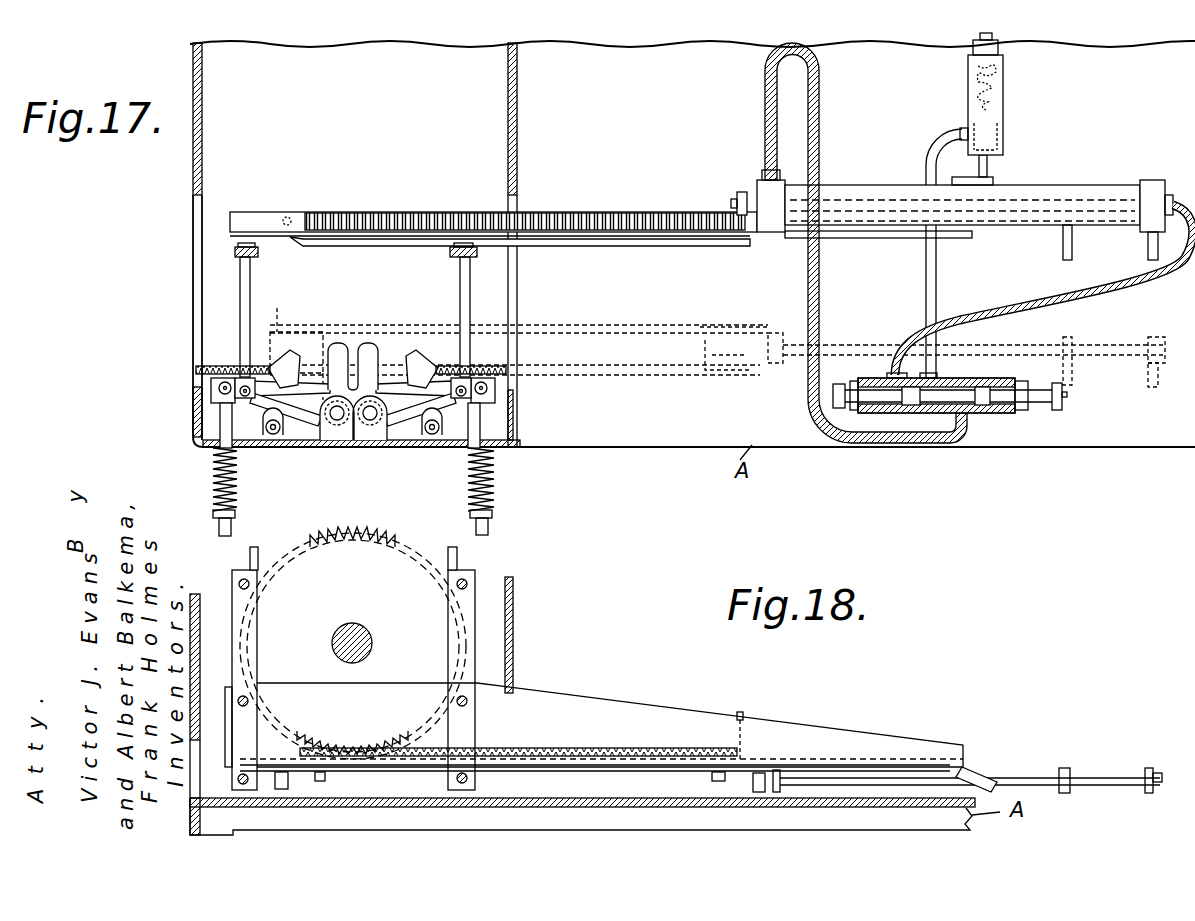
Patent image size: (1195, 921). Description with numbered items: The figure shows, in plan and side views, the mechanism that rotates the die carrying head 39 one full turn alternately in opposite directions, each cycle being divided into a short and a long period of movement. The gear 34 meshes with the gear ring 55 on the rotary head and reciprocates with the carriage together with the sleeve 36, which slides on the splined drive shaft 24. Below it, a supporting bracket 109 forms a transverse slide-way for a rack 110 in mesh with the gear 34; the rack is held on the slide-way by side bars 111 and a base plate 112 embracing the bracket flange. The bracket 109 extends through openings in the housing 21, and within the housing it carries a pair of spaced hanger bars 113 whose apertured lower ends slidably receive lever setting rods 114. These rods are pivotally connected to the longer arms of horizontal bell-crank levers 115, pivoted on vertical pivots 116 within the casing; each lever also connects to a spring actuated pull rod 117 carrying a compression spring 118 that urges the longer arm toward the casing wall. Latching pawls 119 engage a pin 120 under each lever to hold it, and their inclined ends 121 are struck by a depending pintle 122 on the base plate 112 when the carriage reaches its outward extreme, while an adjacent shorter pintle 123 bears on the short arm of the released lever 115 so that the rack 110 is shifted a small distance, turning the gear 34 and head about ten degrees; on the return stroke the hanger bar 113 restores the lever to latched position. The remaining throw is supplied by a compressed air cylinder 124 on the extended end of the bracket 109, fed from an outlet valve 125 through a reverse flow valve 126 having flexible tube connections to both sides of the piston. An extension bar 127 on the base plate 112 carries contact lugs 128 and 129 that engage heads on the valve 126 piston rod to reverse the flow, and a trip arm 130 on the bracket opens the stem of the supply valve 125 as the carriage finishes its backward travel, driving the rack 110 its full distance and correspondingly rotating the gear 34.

In FIG. 17, the housing 21 is at (192, 350).
In FIG. 18, the housing 21 is at (514, 588).
In FIG. 18, the shaft 24 is at (370, 638).
In FIG. 18, the gear 34 is at (350, 540).
In FIG. 18, the sleeve 36 is at (345, 630).
In FIG. 18, the die carrying head 39 is at (318, 526).
In FIG. 18, the toothed segment 55 is at (386, 524).
In FIG. 17, the supporting bracket 109 is at (253, 212).
In FIG. 18, the supporting bracket 109 is at (585, 698).
In FIG. 17, the rack 110 is at (581, 212).
In FIG. 18, the rack 110 is at (665, 740).
In FIG. 17, the side bars 111 is at (425, 212).
In FIG. 18, the base plate 112 is at (426, 784).
In FIG. 17, the hanger bars 113 is at (238, 262).
In FIG. 18, the hanger bars 113 is at (470, 660).
In FIG. 17, the lever setting rods 114 is at (460, 272).
In FIG. 18, the lever setting rods 114 is at (462, 776).
In FIG. 17, the bell-crank levers 115 is at (235, 248).
In FIG. 17, the vertical pivots 116 is at (343, 422).
In FIG. 17, the pull rod 117 is at (220, 420).
In FIG. 17, the compression spring 118 is at (212, 476).
In FIG. 17, the latching pawls 119 is at (222, 432).
In FIG. 17, the pin 120 is at (492, 416).
In FIG. 17, the inclined ends 121 is at (410, 352).
In FIG. 17, the depending pintle 122 is at (290, 217).
In FIG. 18, the depending pintle 122 is at (292, 790).
In FIG. 17, the shorter pintle 123 is at (334, 213).
In FIG. 18, the shorter pintle 123 is at (330, 781).
In FIG. 17, the cylinder 124 is at (1070, 186).
In FIG. 17, the outlet valve 125 is at (1003, 86).
In FIG. 17, the reverse flow valve 126 is at (985, 413).
In FIG. 18, the extension bar 127 is at (1012, 778).
In FIG. 17, the contact lug 128 is at (1062, 337).
In FIG. 18, the contact lug 128 is at (1067, 768).
In FIG. 17, the contact lug 129 is at (1152, 260).
In FIG. 18, the contact lug 129 is at (1160, 761).
In FIG. 17, the trip arm 130 is at (994, 179).
In FIG. 18, the trip arm 130 is at (975, 766).